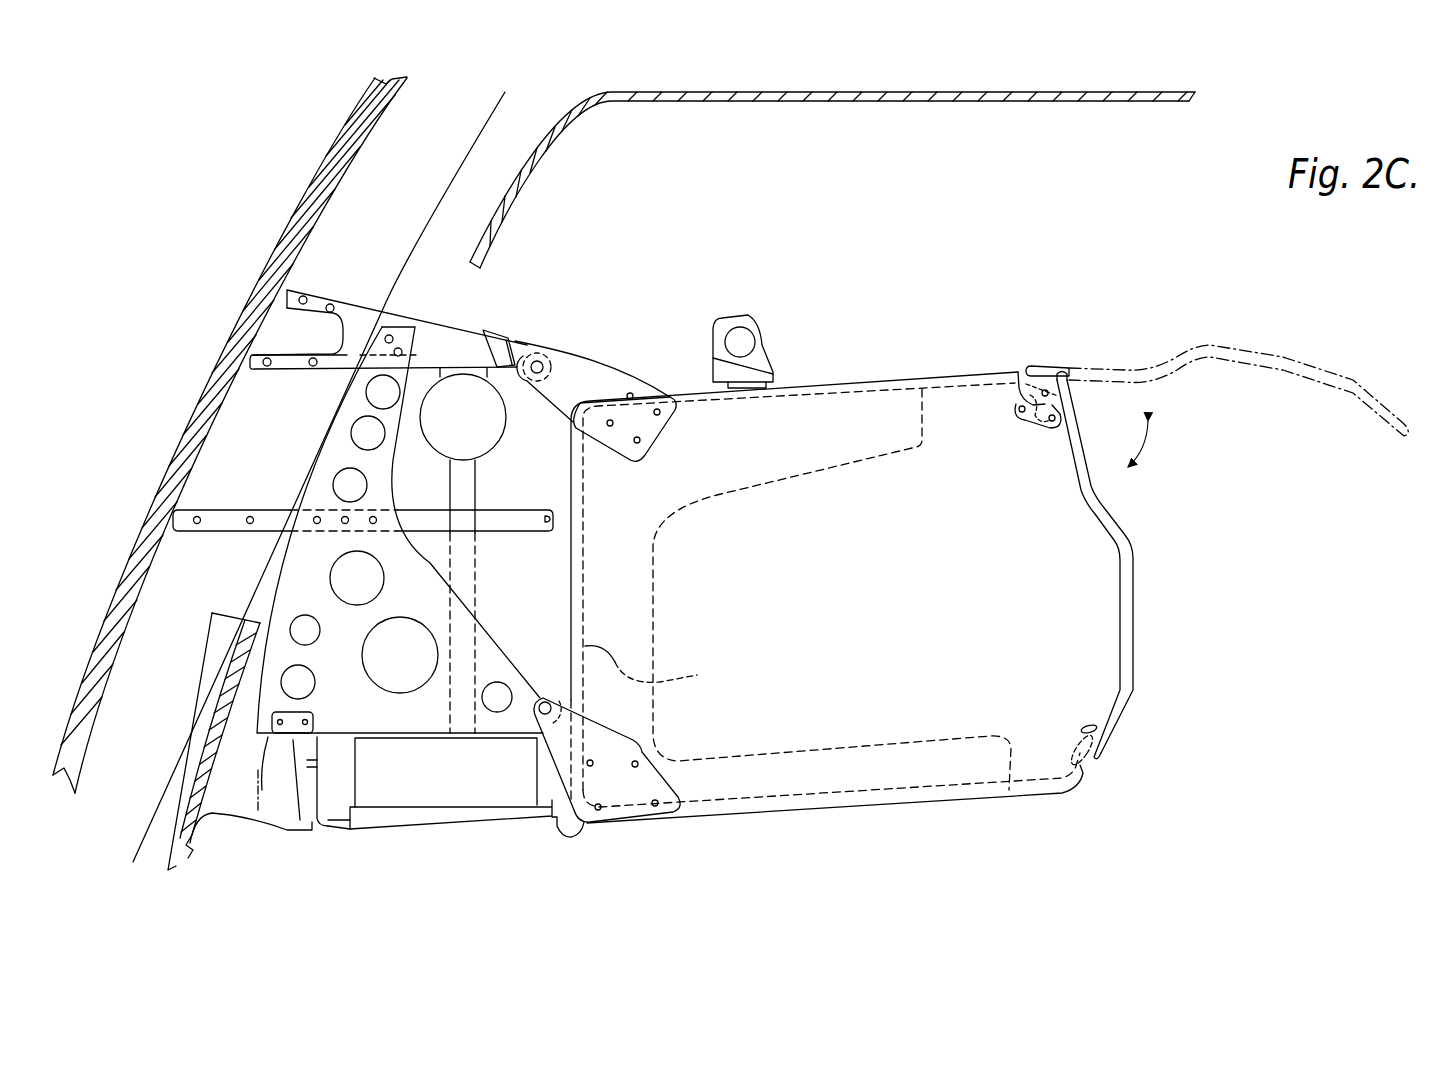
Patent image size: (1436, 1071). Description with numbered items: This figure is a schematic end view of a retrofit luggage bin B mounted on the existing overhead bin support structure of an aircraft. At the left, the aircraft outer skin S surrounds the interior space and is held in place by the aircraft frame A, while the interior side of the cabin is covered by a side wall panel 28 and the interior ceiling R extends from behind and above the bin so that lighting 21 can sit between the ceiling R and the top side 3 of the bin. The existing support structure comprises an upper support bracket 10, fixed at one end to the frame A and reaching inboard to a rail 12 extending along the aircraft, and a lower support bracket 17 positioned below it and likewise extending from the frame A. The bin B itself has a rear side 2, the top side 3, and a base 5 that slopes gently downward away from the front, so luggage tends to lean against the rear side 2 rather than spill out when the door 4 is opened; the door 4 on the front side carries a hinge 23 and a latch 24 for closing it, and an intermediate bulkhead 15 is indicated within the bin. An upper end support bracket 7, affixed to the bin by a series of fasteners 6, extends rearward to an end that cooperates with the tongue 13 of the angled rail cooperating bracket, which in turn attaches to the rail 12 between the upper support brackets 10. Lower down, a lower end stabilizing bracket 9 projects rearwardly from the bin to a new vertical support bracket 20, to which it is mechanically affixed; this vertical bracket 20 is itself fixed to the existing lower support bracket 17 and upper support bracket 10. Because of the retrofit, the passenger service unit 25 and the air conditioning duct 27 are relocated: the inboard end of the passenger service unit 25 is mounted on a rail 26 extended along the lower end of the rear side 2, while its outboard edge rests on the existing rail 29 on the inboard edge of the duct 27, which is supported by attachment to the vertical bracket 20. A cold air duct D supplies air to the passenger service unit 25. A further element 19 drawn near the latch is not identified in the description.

The rear side 2 is at (649, 665).
The top side 3 is at (790, 385).
The door 4 is at (1283, 357).
The base 5 is at (921, 797).
The fasteners 6 is at (653, 427).
The upper end support bracket 7 is at (580, 370).
The lower end stabilizing bracket 9 is at (627, 797).
The upper support bracket 10 is at (357, 307).
The rail 12 is at (550, 353).
The tongue 13 is at (500, 332).
The intermediate bulkhead 15 is at (721, 496).
The lower support bracket 17 is at (500, 520).
The lower latch striker 19 is at (1131, 741).
The vertical support bracket 20 is at (503, 640).
The lighting 21 is at (757, 332).
The hinge 23 is at (1026, 442).
The latch 24 is at (1068, 737).
The passenger service unit 25 is at (477, 798).
The rail 26 is at (568, 836).
The air conditioning duct 27 is at (290, 798).
The side wall panel 28 is at (215, 753).
The existing rail 29 is at (340, 827).
The aircraft frame A is at (333, 227).
The outer skin S is at (173, 470).
The interior ceiling R is at (735, 100).
The retrofit luggage bin B is at (1013, 345).
The cold air duct D is at (463, 550).